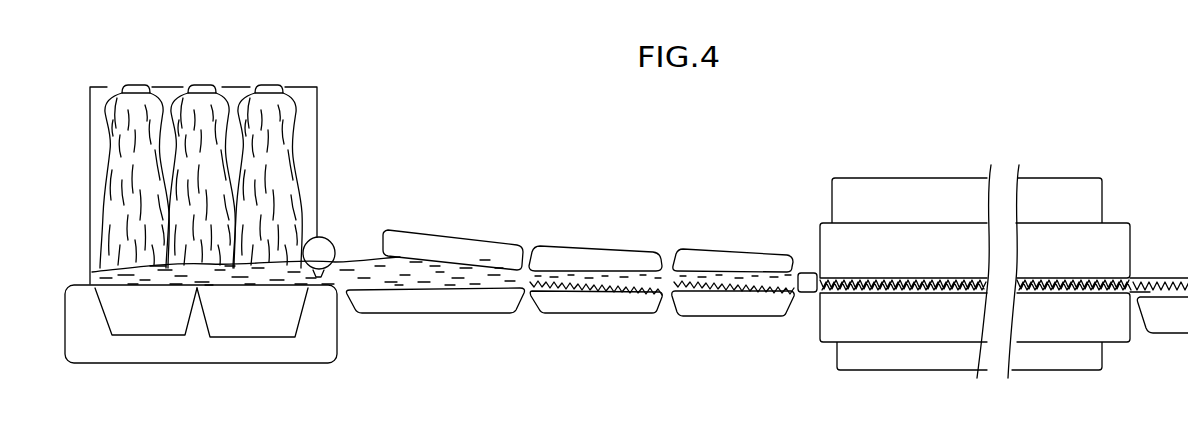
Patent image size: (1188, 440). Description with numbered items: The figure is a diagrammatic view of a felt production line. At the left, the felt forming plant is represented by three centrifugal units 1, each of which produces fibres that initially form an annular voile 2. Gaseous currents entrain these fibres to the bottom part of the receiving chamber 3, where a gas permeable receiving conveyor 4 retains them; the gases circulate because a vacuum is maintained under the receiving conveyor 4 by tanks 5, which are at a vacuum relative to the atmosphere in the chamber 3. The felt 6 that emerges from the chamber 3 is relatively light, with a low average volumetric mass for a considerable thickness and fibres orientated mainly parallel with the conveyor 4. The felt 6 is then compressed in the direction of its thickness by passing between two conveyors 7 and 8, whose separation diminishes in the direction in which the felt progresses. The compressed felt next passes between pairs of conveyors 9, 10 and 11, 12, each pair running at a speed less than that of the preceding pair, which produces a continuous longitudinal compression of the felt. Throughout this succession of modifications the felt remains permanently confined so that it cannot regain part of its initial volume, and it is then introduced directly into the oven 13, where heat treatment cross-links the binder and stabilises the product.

The centrifugal unit 1 is at (130, 85).
The annular voile 2 is at (120, 145).
The receiving chamber 3 is at (311, 161).
The receiving conveyor 4 is at (136, 290).
The tank 5 is at (181, 328).
The felt 6 is at (358, 263).
The conveyor 7 is at (417, 313).
The conveyor 8 is at (452, 245).
The conveyor 9 is at (608, 313).
The conveyor 10 is at (585, 248).
The conveyor 11 is at (727, 316).
The conveyor 12 is at (720, 250).
The oven 13 is at (885, 218).